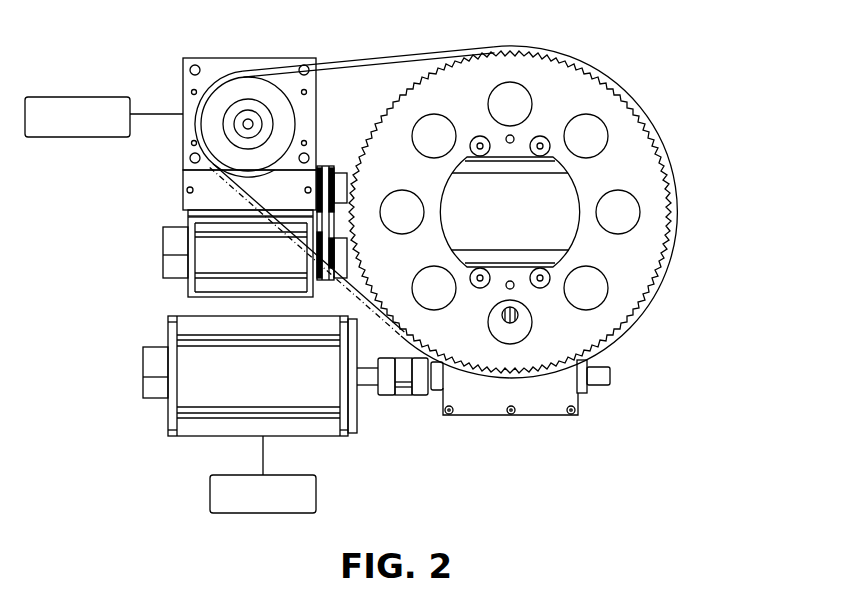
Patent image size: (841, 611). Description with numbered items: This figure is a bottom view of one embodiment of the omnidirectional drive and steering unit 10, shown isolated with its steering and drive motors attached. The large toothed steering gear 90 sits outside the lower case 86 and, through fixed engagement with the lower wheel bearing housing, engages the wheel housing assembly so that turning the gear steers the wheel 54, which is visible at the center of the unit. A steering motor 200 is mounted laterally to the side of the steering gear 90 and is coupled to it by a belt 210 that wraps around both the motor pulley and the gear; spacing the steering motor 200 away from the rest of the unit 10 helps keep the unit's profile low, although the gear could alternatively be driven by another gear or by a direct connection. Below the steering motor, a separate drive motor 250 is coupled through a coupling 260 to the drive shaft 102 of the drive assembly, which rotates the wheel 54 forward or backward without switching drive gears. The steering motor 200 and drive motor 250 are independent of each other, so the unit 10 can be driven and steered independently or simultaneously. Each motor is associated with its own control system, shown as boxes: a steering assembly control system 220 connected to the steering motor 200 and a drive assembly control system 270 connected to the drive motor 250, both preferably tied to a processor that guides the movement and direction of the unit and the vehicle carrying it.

The omnidirectional drive and steering unit 10 is at (704, 90).
The wheel 54 is at (502, 219).
The lower case 86 is at (531, 411).
The steering gear 90 is at (628, 282).
The drive shaft 102 is at (596, 379).
The steering motor 200 is at (232, 67).
The belt 210 is at (407, 62).
The steering assembly control system 220 is at (78, 97).
The drive motor 250 is at (197, 433).
The coupling 260 is at (402, 396).
The drive assembly control system 270 is at (213, 508).